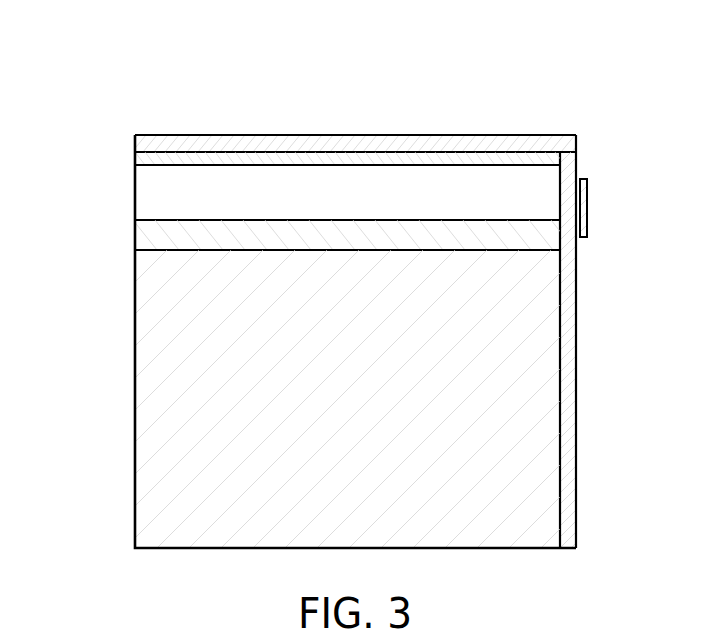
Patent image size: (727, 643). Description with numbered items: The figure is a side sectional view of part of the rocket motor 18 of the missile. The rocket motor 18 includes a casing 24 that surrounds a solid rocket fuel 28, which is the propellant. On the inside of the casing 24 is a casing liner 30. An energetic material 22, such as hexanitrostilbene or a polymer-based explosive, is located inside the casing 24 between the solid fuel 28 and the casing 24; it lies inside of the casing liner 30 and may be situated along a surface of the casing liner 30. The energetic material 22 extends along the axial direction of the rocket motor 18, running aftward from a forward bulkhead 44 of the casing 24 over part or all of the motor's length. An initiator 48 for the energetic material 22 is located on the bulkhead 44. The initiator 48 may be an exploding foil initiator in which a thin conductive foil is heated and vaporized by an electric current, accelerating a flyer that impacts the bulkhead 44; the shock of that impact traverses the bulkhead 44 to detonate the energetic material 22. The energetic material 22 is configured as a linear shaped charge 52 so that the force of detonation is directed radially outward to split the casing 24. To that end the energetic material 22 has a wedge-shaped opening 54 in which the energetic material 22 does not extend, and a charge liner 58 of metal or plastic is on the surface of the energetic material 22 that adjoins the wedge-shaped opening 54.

The rocket motor 18 is at (535, 104).
The linear shaped charge 52 is at (124, 183).
The wedge-shaped opening 54 is at (207, 180).
The casing 24 is at (285, 136).
The casing liner 30 is at (432, 152).
The charge liner 58 is at (145, 221).
The energetic material 22 is at (138, 233).
The solid rocket fuel 28 is at (142, 363).
The forward bulkhead 44 is at (577, 345).
The initiator 48 is at (587, 203).